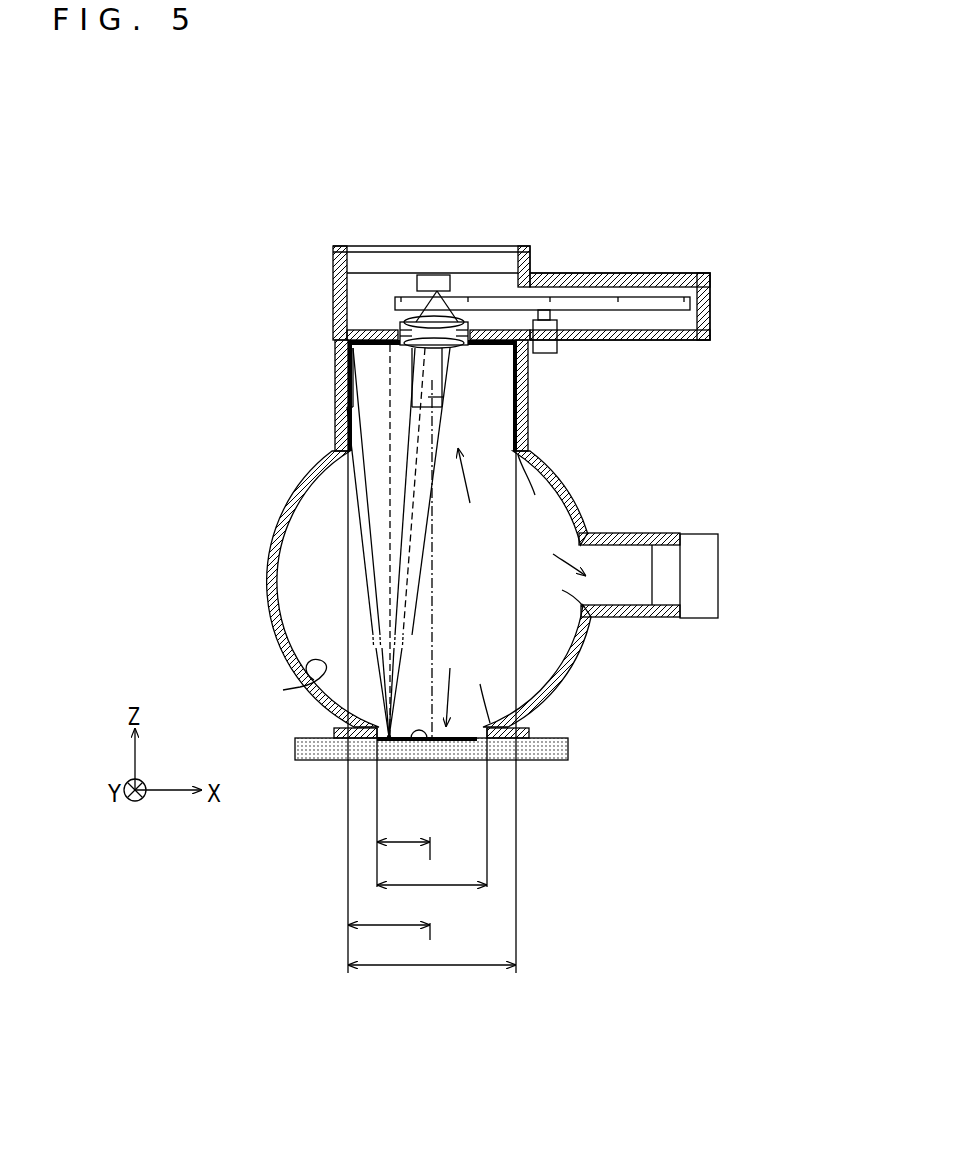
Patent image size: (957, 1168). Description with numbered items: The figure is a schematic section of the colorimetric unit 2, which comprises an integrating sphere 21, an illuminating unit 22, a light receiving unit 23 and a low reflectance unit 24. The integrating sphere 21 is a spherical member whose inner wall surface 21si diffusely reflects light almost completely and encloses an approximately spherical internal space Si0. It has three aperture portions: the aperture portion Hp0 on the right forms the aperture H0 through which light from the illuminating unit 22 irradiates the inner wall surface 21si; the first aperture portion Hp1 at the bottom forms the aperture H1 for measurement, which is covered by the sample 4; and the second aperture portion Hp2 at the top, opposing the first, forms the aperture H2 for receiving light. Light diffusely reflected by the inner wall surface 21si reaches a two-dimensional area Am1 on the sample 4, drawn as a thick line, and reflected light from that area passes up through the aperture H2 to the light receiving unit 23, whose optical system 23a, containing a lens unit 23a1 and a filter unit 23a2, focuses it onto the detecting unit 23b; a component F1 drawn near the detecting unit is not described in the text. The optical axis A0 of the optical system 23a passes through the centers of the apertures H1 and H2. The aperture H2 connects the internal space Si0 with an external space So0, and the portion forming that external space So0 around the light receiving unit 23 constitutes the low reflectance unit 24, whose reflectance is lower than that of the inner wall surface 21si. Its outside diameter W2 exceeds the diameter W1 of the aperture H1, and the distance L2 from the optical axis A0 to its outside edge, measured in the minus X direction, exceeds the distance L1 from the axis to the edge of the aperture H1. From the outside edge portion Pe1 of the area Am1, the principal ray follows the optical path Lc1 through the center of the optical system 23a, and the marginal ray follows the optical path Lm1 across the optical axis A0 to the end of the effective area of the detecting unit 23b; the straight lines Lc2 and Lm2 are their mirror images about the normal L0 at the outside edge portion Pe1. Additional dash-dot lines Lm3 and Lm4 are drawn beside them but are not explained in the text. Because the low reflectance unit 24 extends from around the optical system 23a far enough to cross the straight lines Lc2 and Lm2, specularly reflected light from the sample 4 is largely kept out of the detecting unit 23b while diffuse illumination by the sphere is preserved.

The colorimetric unit 2 is at (328, 214).
The light receiving unit 23 is at (330, 286).
The optical system 23a is at (419, 223).
The lens unit 23a1 is at (397, 321).
The filter unit 23a2 is at (412, 317).
The detecting unit 23b is at (434, 281).
The fiber / filter plate F1 is at (457, 296).
The low reflectance unit 24 is at (512, 346).
The integrating sphere 21 is at (288, 501).
The inner wall surface 21si is at (278, 683).
The internal space Si0 is at (325, 603).
The illuminating unit 22 is at (700, 622).
The sample 4 is at (552, 760).
The external space So0 is at (380, 351).
The normal L0 is at (390, 385).
The straight line Lc2 is at (356, 408).
The light ray Lm4 is at (357, 430).
The straight line Lm2 is at (357, 510).
The optical path of the principal ray Lc1 is at (448, 402).
The light ray Lm3 is at (440, 413).
The optical path of the marginal ray Lm1 is at (440, 420).
The optical axis A0 is at (437, 538).
The aperture for receiving light H2 is at (467, 492).
The aperture for measurement H1 is at (447, 685).
The aperture H0 is at (556, 552).
The second aperture portion Hp2 is at (537, 490).
The first aperture portion Hp1 is at (486, 690).
The aperture portion Hp0 is at (554, 591).
The two-dimensional area Am1 is at (427, 738).
The outside edge portion Pe1 is at (389, 740).
The distance L1 is at (403, 807).
The diameter of the aperture for measurement W1 is at (432, 822).
The distance L2 is at (389, 939).
The outside diameter of the low reflectance unit W2 is at (432, 980).